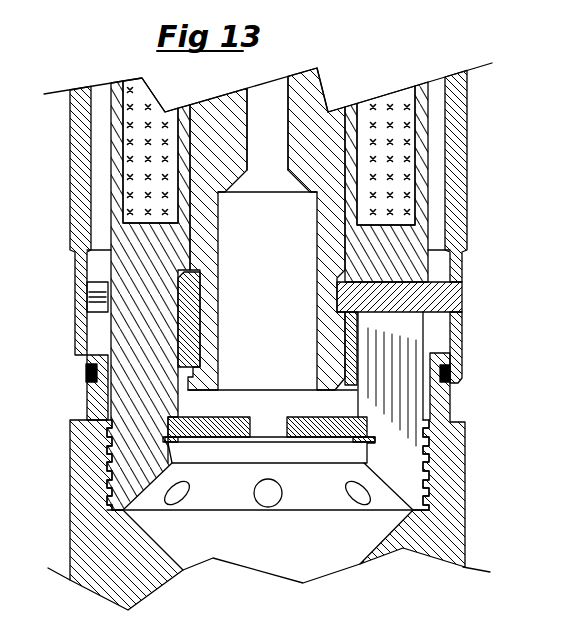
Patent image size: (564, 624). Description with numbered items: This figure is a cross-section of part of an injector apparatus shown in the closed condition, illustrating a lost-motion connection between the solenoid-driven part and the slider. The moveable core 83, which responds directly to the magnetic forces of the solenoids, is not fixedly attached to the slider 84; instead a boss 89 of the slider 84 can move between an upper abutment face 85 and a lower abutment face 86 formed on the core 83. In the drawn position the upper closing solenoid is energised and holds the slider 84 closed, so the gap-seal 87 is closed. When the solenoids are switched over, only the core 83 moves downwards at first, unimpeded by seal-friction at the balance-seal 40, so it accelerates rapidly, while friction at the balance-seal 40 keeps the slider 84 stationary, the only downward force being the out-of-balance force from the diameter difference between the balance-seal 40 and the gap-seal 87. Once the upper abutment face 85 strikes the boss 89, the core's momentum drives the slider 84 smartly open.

The balance-seal 40 is at (87, 383).
The moveable core 83 is at (305, 108).
The slider 84 is at (447, 297).
The upper abutment face 85 is at (343, 268).
The lower abutment face 86 is at (345, 385).
The gap-seal 87 is at (465, 253).
The boss 89 is at (343, 343).